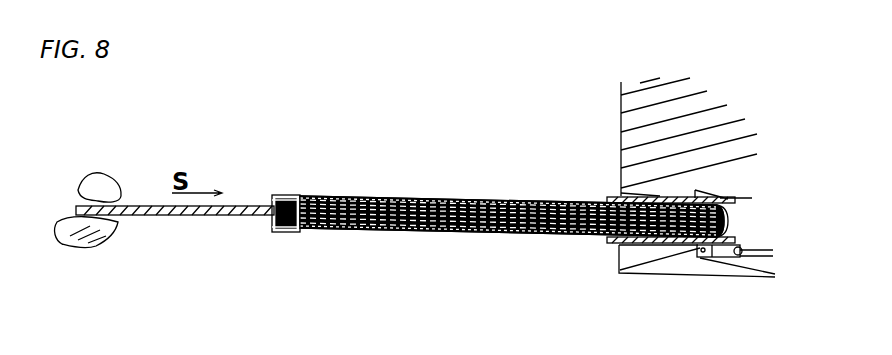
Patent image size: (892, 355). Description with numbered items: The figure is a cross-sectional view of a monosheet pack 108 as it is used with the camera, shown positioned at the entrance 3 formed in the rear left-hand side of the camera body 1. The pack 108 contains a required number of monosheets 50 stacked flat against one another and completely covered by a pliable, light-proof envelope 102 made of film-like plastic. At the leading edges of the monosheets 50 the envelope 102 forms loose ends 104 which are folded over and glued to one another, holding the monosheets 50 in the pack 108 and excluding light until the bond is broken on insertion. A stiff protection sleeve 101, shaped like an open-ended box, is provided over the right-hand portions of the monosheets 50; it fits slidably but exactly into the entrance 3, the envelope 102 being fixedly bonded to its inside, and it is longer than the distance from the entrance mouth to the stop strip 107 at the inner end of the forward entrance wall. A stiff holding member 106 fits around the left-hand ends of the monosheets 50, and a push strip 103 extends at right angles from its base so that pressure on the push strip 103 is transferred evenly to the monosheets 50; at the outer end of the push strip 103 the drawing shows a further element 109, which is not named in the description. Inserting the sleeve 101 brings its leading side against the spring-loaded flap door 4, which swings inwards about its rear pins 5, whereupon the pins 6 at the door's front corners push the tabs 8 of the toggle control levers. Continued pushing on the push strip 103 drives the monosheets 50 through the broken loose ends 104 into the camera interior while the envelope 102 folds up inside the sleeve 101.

The body 1 is at (645, 98).
The entrance 3 is at (658, 185).
The flap door 4 is at (708, 257).
The pins 5 is at (695, 265).
The pins 6 is at (742, 256).
The tabs 8 is at (755, 250).
The monosheets 50 is at (410, 230).
The protection sleeve 101 is at (607, 197).
The envelope 102 is at (510, 234).
The push strip 103 is at (188, 216).
The loose ends 104 is at (721, 257).
The holding member 106 is at (297, 232).
The stop strip 107 is at (731, 237).
The pack 108 is at (410, 190).
The bag 109 is at (66, 232).